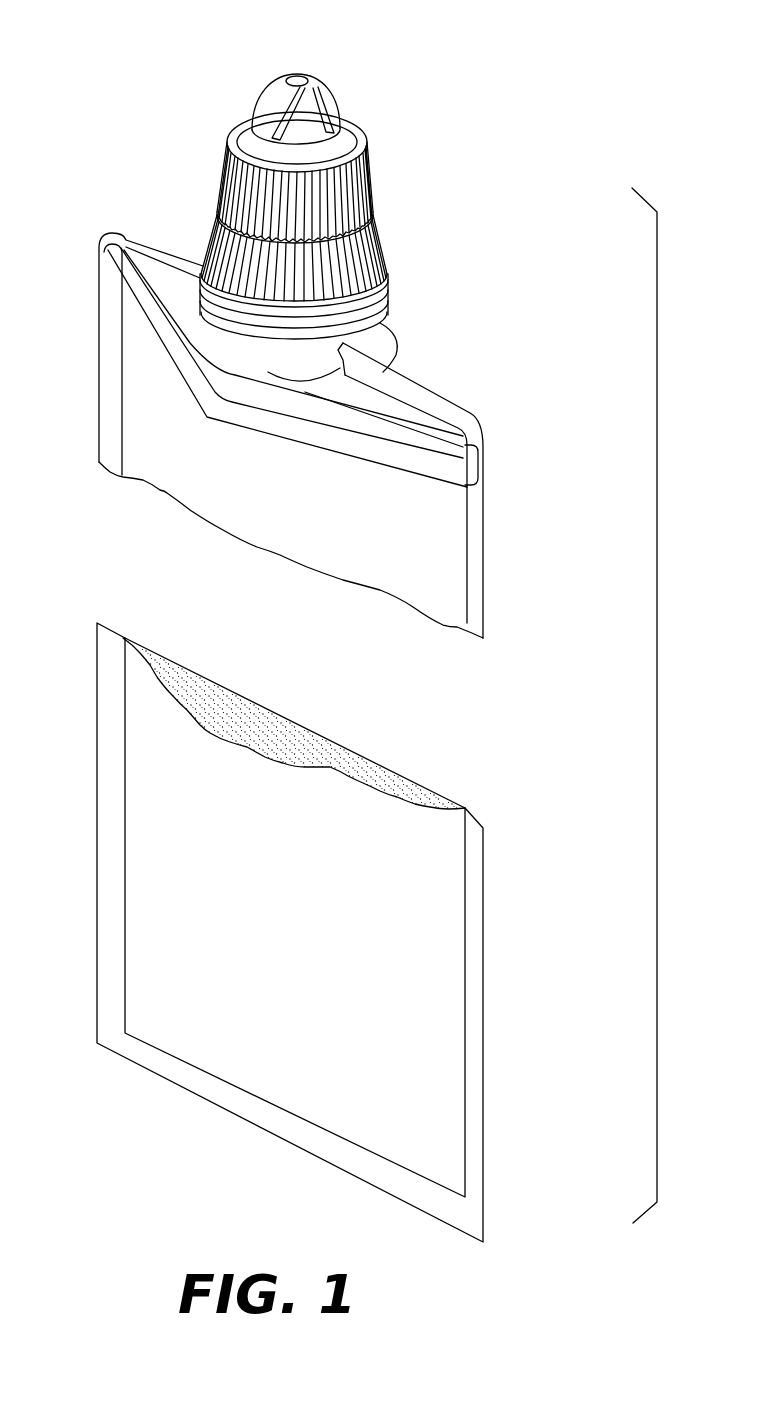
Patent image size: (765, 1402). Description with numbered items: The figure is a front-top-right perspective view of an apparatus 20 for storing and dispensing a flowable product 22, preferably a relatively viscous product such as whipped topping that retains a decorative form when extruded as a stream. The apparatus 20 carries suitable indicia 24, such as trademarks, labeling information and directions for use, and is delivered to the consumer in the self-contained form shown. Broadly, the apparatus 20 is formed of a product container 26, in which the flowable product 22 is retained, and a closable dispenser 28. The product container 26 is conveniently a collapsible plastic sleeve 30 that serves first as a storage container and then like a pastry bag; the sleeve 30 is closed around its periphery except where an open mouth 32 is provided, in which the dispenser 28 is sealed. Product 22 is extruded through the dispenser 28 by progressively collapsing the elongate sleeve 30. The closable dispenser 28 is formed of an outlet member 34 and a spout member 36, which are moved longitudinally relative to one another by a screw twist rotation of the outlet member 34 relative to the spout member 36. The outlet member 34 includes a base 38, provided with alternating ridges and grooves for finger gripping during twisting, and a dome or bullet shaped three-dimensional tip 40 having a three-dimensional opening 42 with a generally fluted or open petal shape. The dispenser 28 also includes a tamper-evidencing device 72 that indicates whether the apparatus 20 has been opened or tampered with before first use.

The apparatus 20 is at (498, 183).
The flowable product 22 is at (388, 757).
The indicia 24 is at (420, 858).
The product container 26 is at (165, 891).
The closable dispenser 28 is at (224, 170).
The sleeve 30 is at (97, 713).
The open mouth 32 is at (412, 365).
The outlet member 34 is at (368, 152).
The spout member 36 is at (390, 280).
The base 38 is at (378, 227).
The 3-D tip 40 is at (333, 92).
The 3-D opening 42 is at (309, 72).
The tamper-evidencing device 72 is at (210, 245).